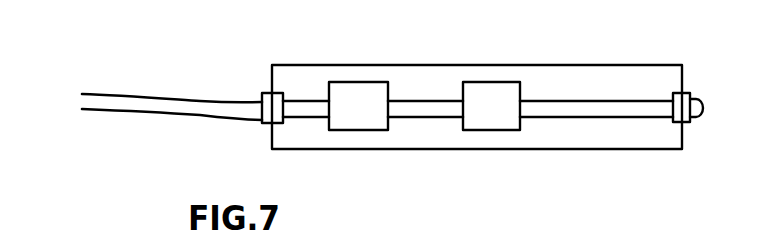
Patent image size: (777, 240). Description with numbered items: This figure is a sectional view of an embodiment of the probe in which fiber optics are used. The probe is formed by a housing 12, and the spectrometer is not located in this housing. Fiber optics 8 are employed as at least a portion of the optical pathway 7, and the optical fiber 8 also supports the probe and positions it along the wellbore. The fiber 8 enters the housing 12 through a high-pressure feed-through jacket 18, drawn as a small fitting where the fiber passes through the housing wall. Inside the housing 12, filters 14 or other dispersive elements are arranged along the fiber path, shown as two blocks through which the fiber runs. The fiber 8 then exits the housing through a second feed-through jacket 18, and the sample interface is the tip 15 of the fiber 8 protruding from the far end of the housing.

The optical pathway 7 is at (214, 120).
The optical fiber 8 is at (193, 100).
The housing 12 is at (298, 64).
The filters 14 is at (367, 115).
The tip 15 is at (703, 100).
The high-pressure feed-through jacket 18 is at (261, 123).